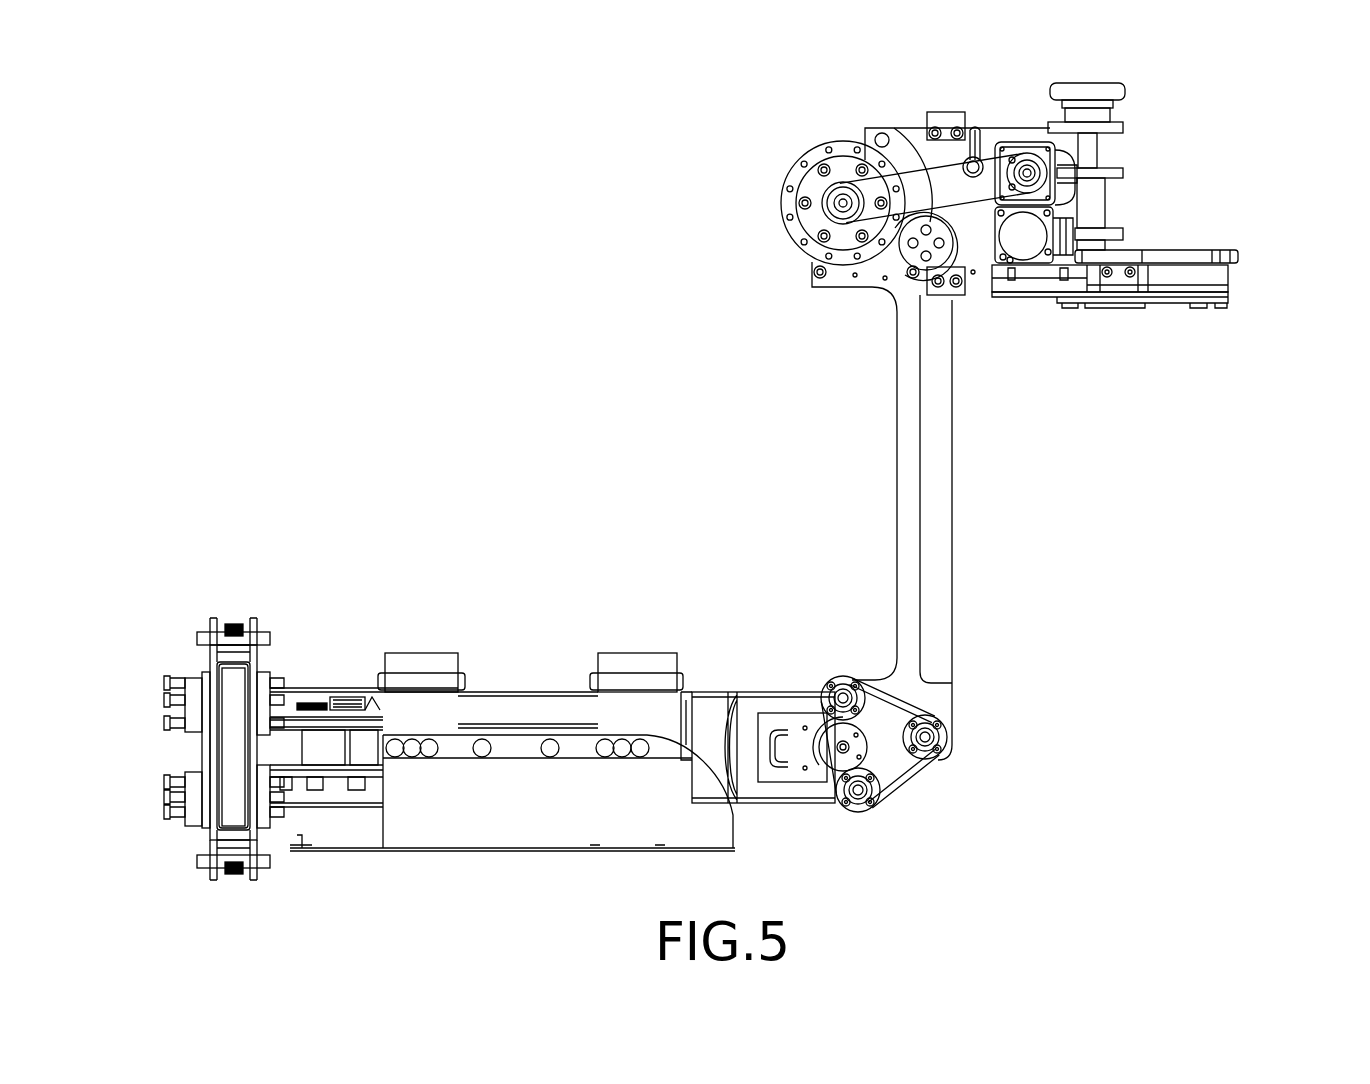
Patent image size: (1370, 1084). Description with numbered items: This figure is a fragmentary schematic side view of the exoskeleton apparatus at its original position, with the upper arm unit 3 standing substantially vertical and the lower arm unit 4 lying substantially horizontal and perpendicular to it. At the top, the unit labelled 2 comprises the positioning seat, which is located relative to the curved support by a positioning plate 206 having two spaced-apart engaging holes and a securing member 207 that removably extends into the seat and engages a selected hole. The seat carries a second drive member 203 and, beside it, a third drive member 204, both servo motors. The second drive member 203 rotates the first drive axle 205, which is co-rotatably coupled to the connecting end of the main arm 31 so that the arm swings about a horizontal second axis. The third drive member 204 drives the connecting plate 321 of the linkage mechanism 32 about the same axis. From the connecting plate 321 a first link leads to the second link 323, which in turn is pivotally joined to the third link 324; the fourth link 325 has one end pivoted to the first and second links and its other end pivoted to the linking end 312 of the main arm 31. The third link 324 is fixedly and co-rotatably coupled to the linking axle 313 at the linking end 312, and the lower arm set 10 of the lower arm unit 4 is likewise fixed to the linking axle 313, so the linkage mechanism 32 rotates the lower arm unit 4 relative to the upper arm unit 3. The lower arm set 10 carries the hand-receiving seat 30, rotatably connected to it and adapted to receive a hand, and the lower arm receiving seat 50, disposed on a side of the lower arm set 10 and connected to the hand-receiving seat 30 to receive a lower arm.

The driving motor 2 is at (1030, 128).
The upper arm unit 3 is at (954, 511).
The lower arm unit 4 is at (500, 665).
The lower arm set 10 is at (556, 688).
The hand-receiving seat 30 is at (217, 815).
The main arm 31 is at (907, 422).
The linkage mechanism 32 is at (946, 508).
The lower arm receiving seat 50 is at (548, 856).
The second drive member 203 is at (1030, 243).
The third drive member 204 is at (1020, 160).
The first drive axle 205 is at (836, 189).
The positioning plate 206 is at (1237, 258).
The securing member 207 is at (1125, 90).
The linking end 312 is at (812, 735).
The linking axle 313 is at (842, 750).
The connecting plate 321 is at (958, 240).
The second link 323 is at (912, 768).
The third link 324 is at (846, 776).
The fourth link 325 is at (890, 700).